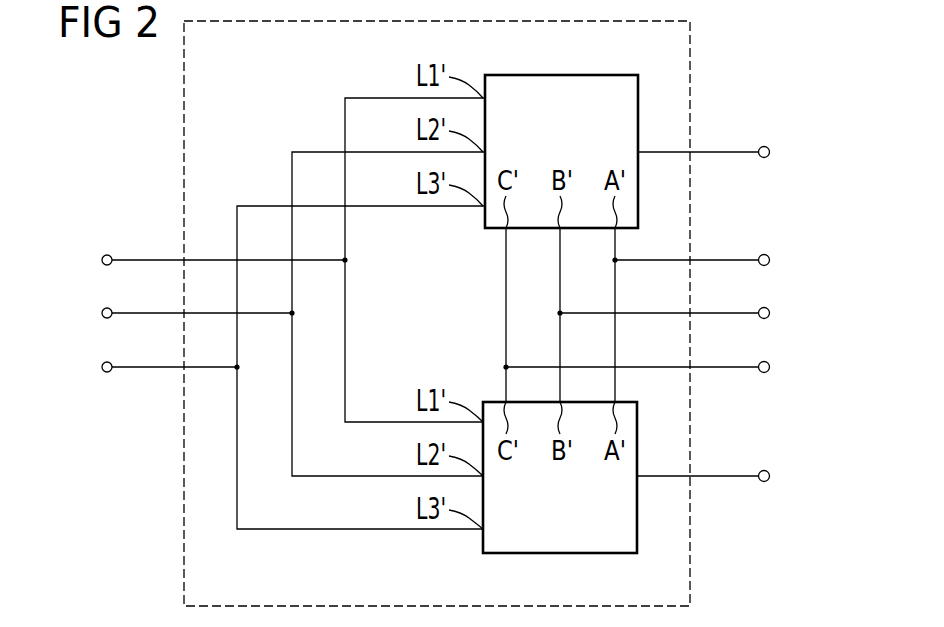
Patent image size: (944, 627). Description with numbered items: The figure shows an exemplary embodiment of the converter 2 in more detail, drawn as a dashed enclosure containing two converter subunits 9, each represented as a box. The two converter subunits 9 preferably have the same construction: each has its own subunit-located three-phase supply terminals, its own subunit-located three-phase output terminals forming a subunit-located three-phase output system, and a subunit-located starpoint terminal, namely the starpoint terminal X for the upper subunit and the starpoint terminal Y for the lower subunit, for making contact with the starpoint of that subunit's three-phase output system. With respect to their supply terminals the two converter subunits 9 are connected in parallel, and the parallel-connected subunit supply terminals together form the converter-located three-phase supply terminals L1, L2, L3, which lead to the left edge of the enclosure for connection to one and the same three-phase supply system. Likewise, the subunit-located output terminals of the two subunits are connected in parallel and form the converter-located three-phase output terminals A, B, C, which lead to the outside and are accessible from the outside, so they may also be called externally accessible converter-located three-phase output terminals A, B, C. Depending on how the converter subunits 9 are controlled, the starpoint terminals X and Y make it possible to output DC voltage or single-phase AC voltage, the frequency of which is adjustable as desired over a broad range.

The converter 2 is at (183, 553).
The converter subunit 9 is at (600, 75).
The converter-located three-phase supply terminal L1 is at (100, 260).
The converter-located three-phase supply terminal L2 is at (100, 313).
The converter-located three-phase supply terminal L3 is at (100, 367).
The converter-located three-phase output terminal A is at (770, 260).
The converter-located three-phase output terminal B is at (770, 313).
The converter-located three-phase output terminal C is at (770, 367).
The subunit-located starpoint terminal X is at (770, 152).
The subunit-located starpoint terminal Y is at (770, 476).